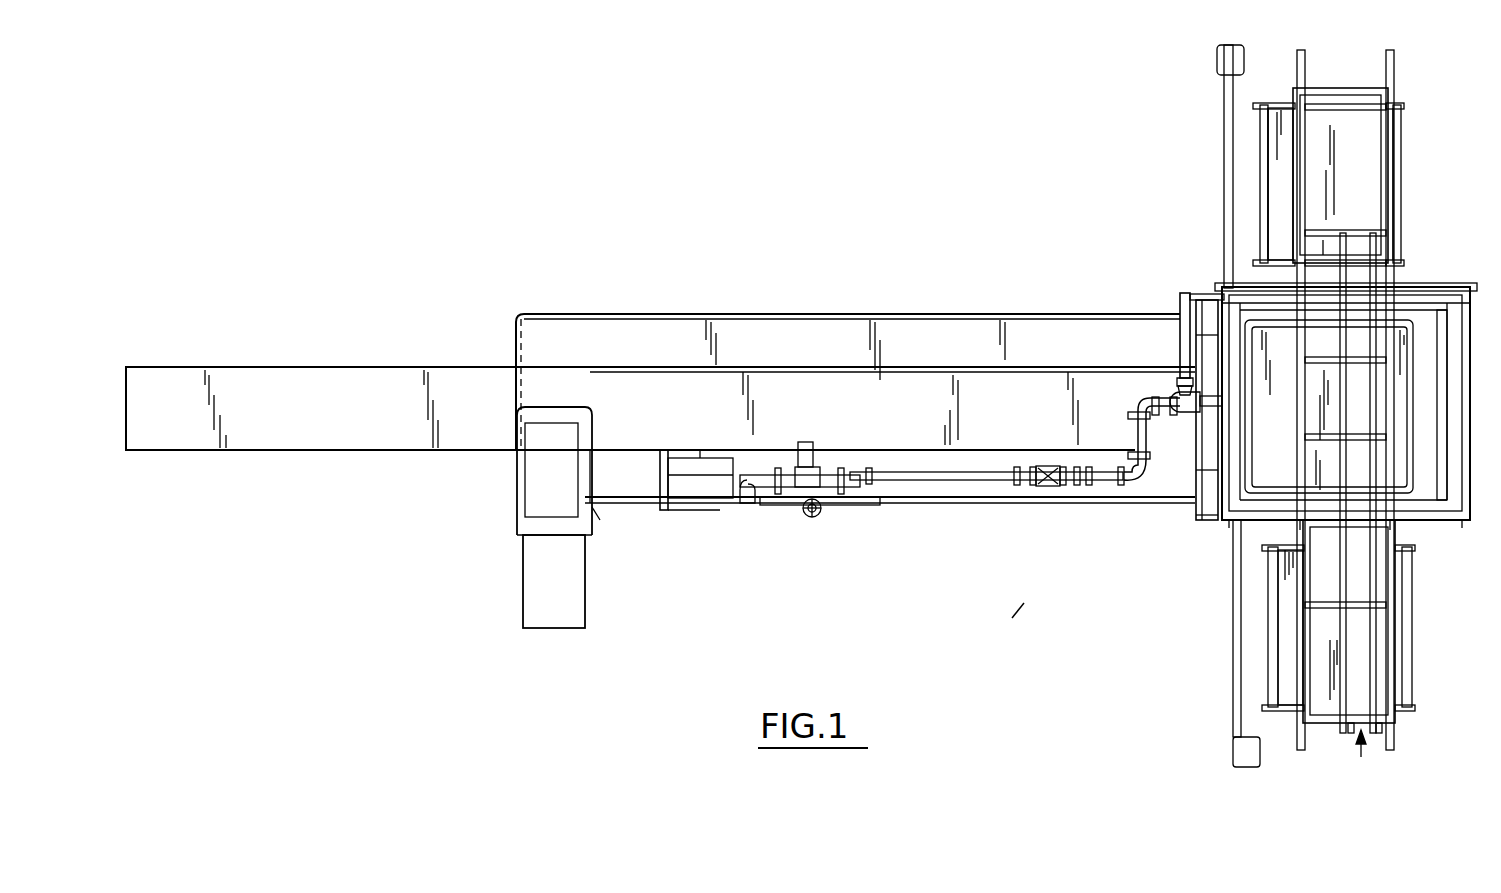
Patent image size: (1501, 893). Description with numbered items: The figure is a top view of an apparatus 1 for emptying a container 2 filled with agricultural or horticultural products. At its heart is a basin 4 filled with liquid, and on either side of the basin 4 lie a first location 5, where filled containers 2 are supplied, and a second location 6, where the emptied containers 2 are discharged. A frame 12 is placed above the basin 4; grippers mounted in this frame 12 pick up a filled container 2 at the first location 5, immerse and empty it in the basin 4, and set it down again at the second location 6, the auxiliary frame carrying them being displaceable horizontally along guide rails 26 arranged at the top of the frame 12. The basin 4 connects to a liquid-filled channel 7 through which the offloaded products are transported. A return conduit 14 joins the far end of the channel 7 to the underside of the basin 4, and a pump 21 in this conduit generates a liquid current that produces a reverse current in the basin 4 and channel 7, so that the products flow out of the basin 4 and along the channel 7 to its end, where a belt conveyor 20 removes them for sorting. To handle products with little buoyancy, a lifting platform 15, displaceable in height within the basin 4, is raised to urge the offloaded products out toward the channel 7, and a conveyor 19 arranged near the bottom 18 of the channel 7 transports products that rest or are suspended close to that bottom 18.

The apparatus 1 is at (1024, 603).
The container 2 is at (1275, 118).
The basin 4 is at (1412, 495).
The first location 5 is at (1412, 660).
The second location 6 is at (1400, 178).
The channel 7 is at (908, 338).
The frame 12 is at (1418, 290).
The return conduit 14 is at (912, 480).
The lifting platform 15 is at (1280, 467).
The bottom 18 is at (1165, 470).
The conveyor 19 is at (990, 432).
The belt conveyor 20 is at (350, 437).
The pump 21 is at (824, 452).
The guide rails 26 is at (1310, 656).